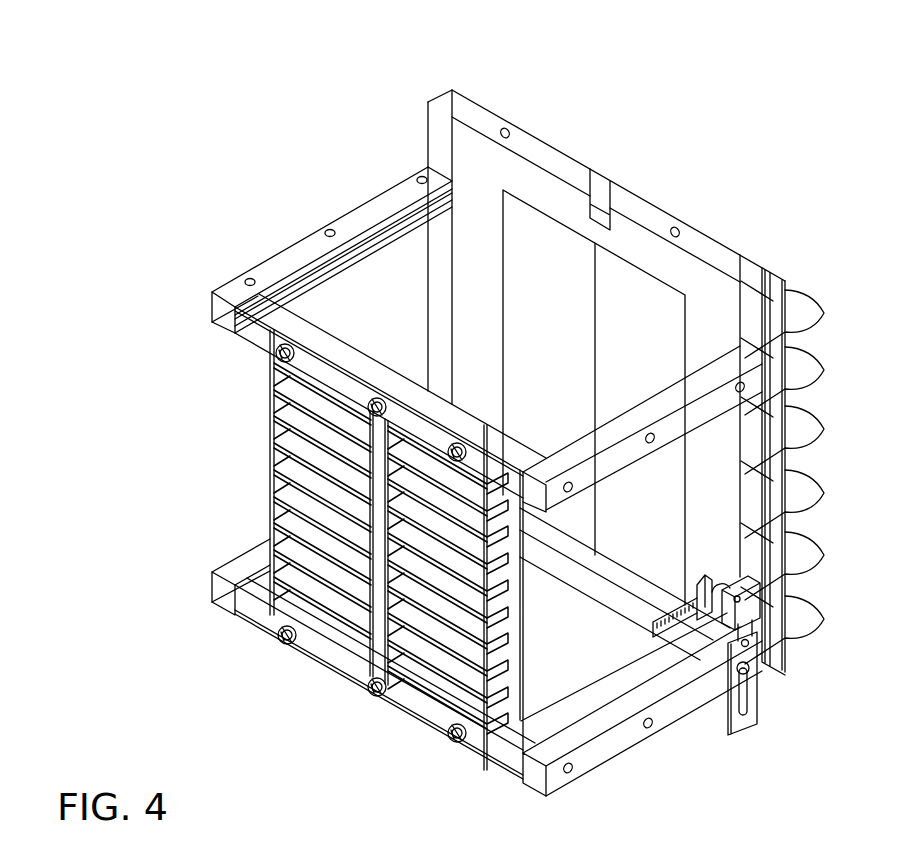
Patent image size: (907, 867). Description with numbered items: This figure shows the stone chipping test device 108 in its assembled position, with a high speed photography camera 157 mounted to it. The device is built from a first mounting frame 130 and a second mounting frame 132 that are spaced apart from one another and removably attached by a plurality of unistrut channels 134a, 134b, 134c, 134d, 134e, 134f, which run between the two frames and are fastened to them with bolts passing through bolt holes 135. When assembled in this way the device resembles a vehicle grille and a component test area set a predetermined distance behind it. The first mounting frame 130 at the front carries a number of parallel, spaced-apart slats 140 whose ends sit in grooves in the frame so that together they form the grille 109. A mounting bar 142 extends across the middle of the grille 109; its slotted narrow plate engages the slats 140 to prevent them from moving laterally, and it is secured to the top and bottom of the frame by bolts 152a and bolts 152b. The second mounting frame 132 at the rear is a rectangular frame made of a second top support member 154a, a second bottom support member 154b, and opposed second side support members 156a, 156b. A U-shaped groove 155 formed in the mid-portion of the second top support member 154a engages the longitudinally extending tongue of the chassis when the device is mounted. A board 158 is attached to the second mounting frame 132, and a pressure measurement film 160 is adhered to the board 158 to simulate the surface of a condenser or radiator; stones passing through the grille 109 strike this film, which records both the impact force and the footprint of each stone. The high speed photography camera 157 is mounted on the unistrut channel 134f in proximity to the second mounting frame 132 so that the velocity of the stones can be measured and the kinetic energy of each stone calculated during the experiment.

The stone chipping test device 108 is at (808, 166).
The grille 109 is at (410, 666).
The first mounting frame 130 is at (530, 675).
The second mounting frame 132 is at (497, 100).
The unistrut channel 134a is at (250, 618).
The unistrut channel 134b is at (320, 338).
The unistrut channel 134c is at (274, 262).
The unistrut channel 134d is at (713, 403).
The unistrut channel 134e is at (664, 716).
The unistrut channel 134f is at (236, 568).
The bolt holes 135 is at (418, 179).
The slats 140 is at (272, 430).
The mounting bar 142 is at (377, 626).
The bolts 152a is at (277, 355).
The bolts 152b is at (281, 643).
The second top support member 154a is at (658, 214).
The second bottom support member 154b is at (612, 598).
The U-shaped groove 155 is at (598, 183).
The second side support member 156a is at (750, 486).
The second side support member 156b is at (437, 142).
The high speed photography camera 157 is at (772, 706).
The board 158 is at (713, 287).
The pressure measurement film 160 is at (527, 337).